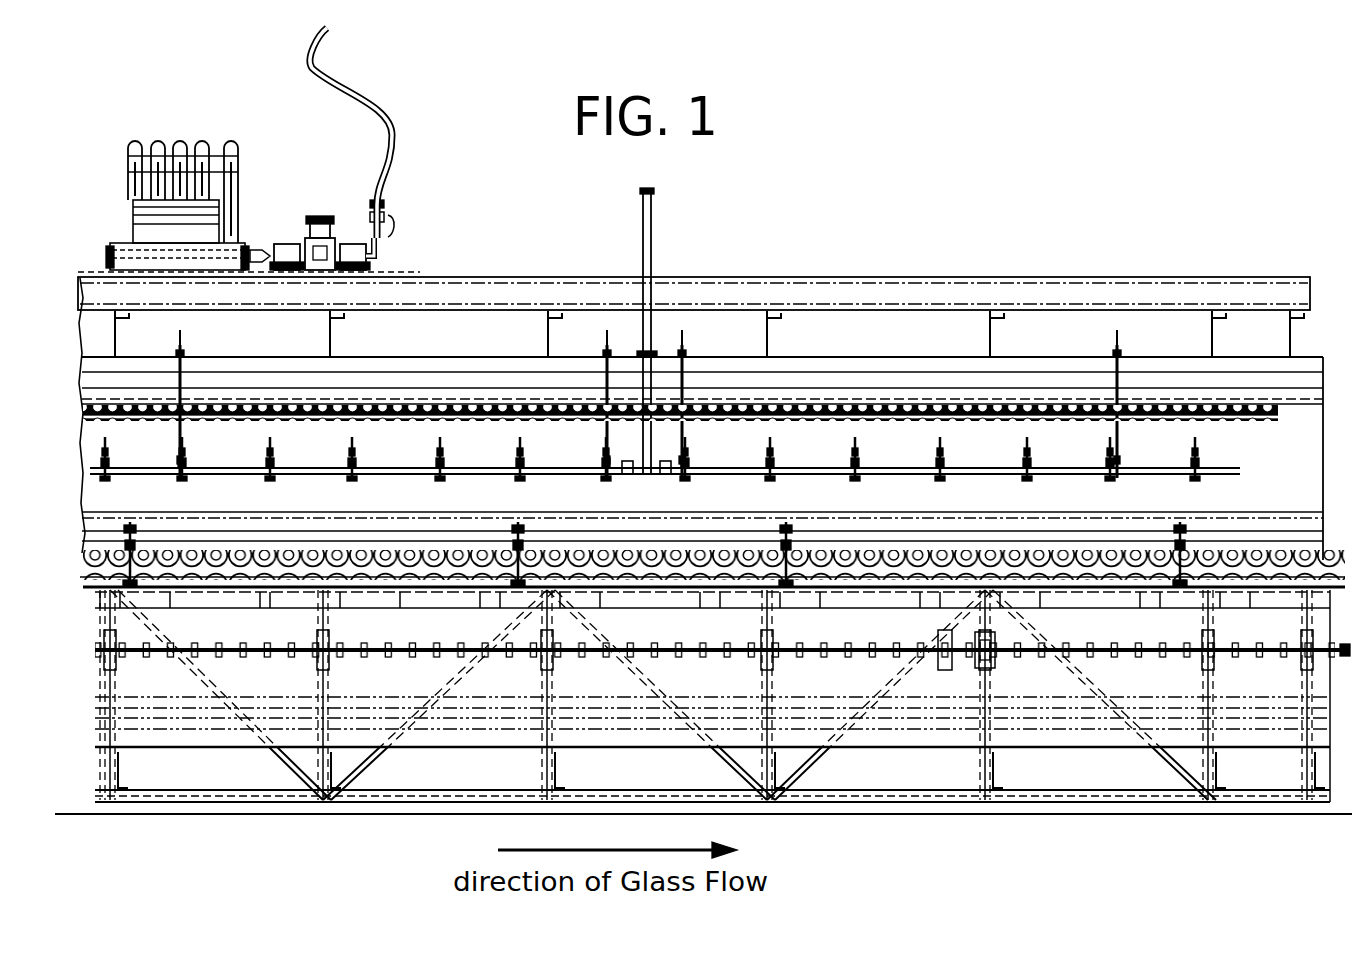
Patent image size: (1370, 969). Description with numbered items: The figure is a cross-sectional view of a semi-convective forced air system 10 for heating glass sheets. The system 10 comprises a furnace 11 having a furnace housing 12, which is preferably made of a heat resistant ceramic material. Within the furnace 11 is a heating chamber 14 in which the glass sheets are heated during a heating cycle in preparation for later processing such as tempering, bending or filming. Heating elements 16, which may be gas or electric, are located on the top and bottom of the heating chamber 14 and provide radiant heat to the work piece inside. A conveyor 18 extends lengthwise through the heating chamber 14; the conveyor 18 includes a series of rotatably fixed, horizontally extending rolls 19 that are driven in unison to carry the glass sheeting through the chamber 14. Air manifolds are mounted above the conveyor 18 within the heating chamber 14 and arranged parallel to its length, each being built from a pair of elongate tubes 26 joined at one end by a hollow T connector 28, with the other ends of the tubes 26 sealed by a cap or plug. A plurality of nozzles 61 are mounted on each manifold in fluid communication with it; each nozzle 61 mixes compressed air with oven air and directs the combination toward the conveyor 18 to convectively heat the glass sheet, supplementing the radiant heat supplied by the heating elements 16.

The semi-convective forced air system 10 is at (1022, 228).
The furnace 11 is at (494, 268).
The furnace housing 12 is at (836, 290).
The heating chamber 14 is at (904, 456).
The heating elements 16 is at (252, 410).
The conveyor 18 is at (1245, 560).
The rolls 19 is at (378, 552).
The elongate tubes 26 is at (256, 472).
The hollow T connector 28 is at (662, 476).
The nozzles 61 is at (107, 455).